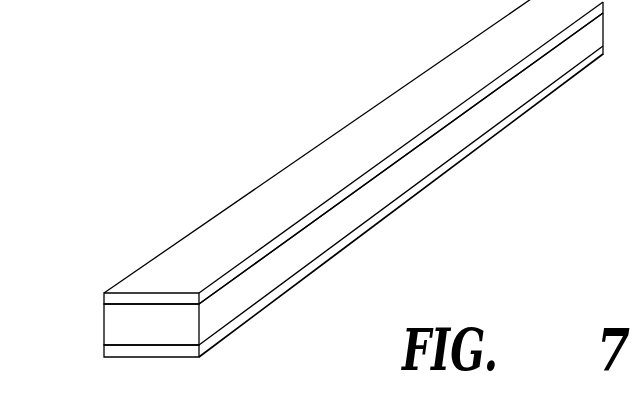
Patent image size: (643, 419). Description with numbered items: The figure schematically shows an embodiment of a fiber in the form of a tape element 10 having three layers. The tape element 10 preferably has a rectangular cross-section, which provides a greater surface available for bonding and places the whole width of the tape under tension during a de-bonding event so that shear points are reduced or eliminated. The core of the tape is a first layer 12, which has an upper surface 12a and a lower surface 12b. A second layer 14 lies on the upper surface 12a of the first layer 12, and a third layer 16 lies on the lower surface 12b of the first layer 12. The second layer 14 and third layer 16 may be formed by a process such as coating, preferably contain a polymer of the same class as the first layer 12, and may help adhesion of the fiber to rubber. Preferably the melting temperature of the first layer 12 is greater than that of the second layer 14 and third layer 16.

The tape element 10 is at (196, 159).
The first layer 12 is at (118, 320).
The upper surface 12a is at (200, 303).
The lower surface 12b is at (200, 346).
The second layer 14 is at (119, 299).
The third layer 16 is at (127, 351).